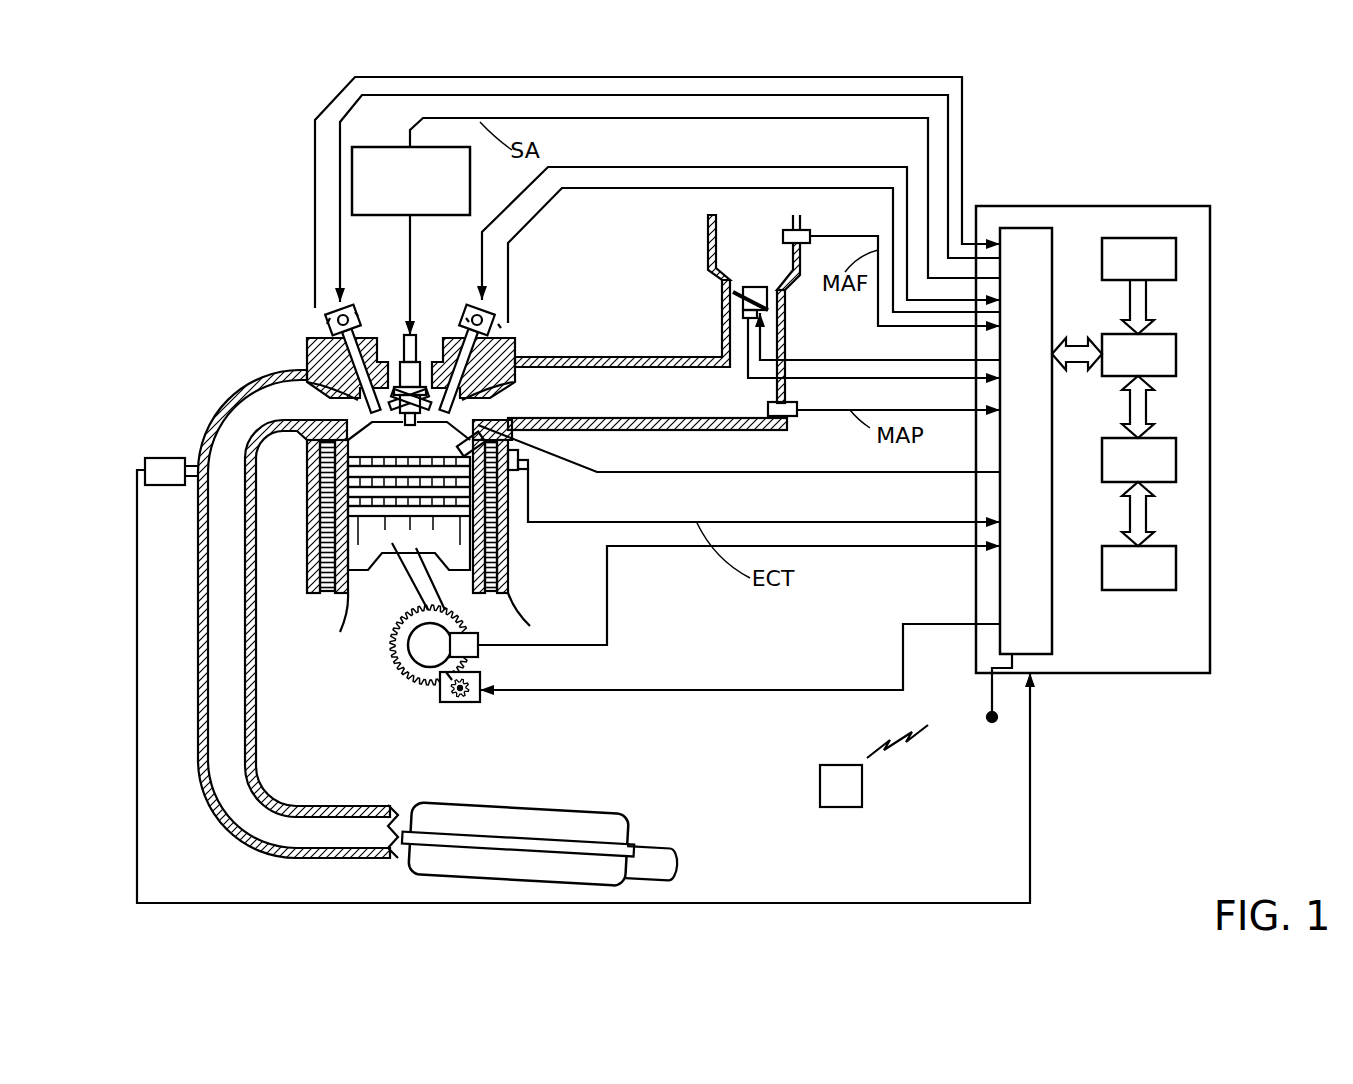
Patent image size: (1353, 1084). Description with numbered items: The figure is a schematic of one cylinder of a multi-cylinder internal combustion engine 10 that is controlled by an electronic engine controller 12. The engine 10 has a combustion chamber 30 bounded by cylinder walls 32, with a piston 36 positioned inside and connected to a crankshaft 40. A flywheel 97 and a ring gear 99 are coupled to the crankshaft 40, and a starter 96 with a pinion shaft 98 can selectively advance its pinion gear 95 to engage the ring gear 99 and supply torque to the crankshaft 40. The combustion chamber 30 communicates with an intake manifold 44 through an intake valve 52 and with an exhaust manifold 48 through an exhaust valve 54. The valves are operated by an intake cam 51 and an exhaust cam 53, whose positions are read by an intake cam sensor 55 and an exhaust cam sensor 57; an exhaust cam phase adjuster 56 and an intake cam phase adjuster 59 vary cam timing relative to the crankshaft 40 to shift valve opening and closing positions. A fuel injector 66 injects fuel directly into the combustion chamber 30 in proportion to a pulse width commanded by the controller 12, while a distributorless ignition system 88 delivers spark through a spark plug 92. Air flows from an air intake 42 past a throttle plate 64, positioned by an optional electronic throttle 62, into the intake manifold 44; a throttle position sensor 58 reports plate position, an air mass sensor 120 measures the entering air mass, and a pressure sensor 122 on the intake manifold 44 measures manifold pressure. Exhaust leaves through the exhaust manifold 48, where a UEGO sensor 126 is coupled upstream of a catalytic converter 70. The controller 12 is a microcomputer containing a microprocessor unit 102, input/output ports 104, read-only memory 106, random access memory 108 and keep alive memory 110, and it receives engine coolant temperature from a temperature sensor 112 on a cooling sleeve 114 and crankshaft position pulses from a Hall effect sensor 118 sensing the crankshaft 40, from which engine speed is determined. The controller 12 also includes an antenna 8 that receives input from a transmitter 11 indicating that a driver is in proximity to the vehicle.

The antenna 8 is at (990, 702).
The internal combustion engine 10 is at (243, 293).
The transmitter 11 is at (874, 766).
The electronic engine controller 12 is at (1198, 204).
The combustion chamber 30 is at (405, 442).
The cylinder walls 32 is at (350, 597).
The piston 36 is at (392, 583).
The crankshaft 40 is at (417, 672).
The air intake 42 is at (742, 265).
The intake manifold 44 is at (677, 407).
The exhaust manifold 48 is at (262, 412).
The intake cam 51 is at (466, 295).
The intake valve 52 is at (455, 402).
The exhaust cam 53 is at (352, 303).
The exhaust valve 54 is at (307, 370).
The intake cam sensor 55 is at (500, 326).
The exhaust cam phase adjuster 56 is at (357, 313).
The exhaust cam sensor 57 is at (327, 324).
The throttle position sensor 58 is at (725, 318).
The intake cam phase adjuster 59 is at (468, 320).
The electronic throttle 62 is at (787, 295).
The throttle plate 64 is at (733, 297).
The fuel injector 66 is at (485, 438).
The catalytic converter 70 is at (422, 805).
The distributorless ignition system 88 is at (365, 147).
The spark plug 92 is at (418, 335).
The pinion gear 95 is at (473, 697).
The starter 96 is at (480, 702).
The flywheel 97 is at (407, 640).
The pinion shaft 98 is at (460, 693).
The ring gear 99 is at (425, 688).
The microprocessor unit 102 is at (1176, 352).
The input/output ports 104 is at (1054, 236).
The read-only memory 106 is at (1176, 256).
The random access memory 108 is at (1176, 460).
The keep alive memory 110 is at (1176, 566).
The temperature sensor 112 is at (533, 470).
The cooling sleeve 114 is at (507, 545).
The Hall effect sensor 118 is at (478, 633).
The air mass sensor 120 is at (800, 228).
The pressure sensor 122 is at (795, 420).
The Universal Exhaust Gas Oxygen (UEGO) sensor 126 is at (145, 462).